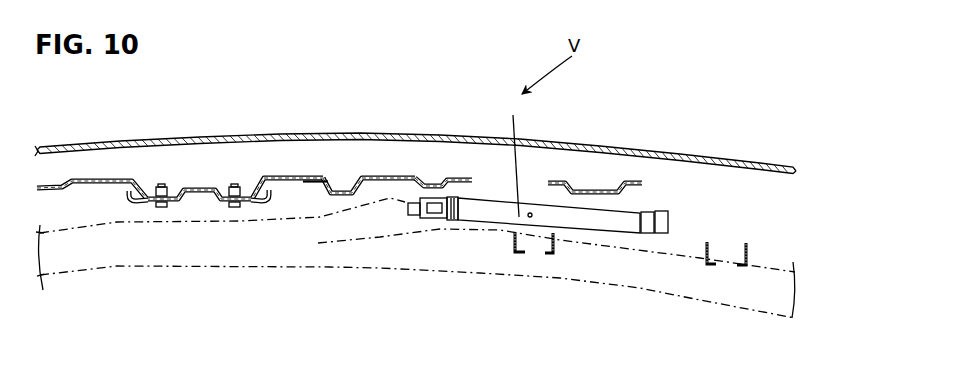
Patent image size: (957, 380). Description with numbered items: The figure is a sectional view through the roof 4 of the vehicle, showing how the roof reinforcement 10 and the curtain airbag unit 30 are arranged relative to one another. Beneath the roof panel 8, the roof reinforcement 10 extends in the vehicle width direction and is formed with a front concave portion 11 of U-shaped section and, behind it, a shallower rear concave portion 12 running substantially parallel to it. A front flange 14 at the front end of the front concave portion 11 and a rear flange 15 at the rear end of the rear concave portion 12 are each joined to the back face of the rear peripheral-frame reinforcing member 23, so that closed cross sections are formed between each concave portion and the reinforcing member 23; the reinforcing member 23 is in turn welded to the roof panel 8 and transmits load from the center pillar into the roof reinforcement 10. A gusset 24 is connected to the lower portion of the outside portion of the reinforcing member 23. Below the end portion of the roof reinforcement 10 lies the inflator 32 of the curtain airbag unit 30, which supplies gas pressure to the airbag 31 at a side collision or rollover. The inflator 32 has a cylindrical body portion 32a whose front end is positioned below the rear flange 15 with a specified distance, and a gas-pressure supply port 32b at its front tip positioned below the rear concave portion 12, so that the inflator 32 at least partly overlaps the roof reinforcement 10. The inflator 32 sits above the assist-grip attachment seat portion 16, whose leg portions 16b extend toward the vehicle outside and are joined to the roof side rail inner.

The roof 4 is at (568, 142).
The roof panel 8 is at (648, 148).
The roof reinforcement 10 is at (325, 197).
The front concave portion 11 is at (338, 196).
The rear concave portion 12 is at (419, 199).
The front flange 14 is at (308, 182).
The rear flange 15 is at (470, 186).
The assist-grip attachment seat portion 16 is at (553, 257).
The leg portion 16b is at (514, 254).
The rear peripheral-frame reinforcing member 23 is at (280, 175).
The gusset 24 is at (195, 203).
The curtain airbag unit 30 is at (257, 272).
The airbag 31 is at (636, 292).
The inflator 32 is at (487, 221).
The body portion 32a is at (496, 157).
The gas-pressure supply port 32b is at (428, 219).